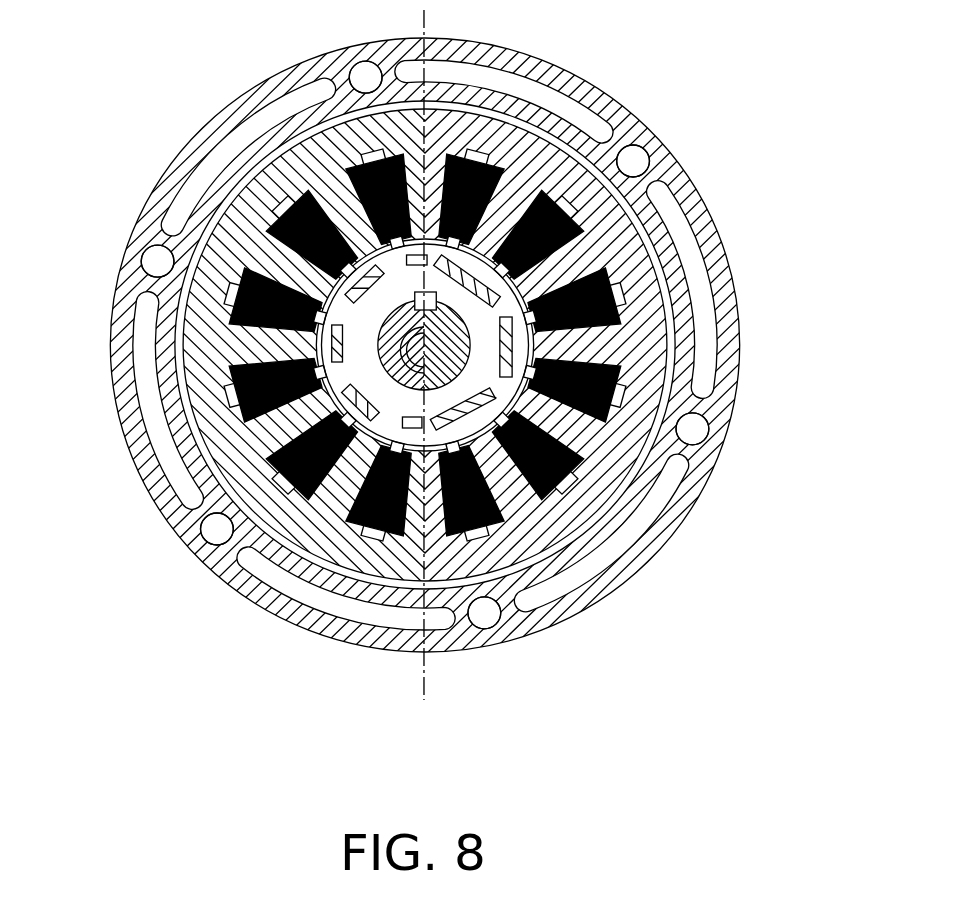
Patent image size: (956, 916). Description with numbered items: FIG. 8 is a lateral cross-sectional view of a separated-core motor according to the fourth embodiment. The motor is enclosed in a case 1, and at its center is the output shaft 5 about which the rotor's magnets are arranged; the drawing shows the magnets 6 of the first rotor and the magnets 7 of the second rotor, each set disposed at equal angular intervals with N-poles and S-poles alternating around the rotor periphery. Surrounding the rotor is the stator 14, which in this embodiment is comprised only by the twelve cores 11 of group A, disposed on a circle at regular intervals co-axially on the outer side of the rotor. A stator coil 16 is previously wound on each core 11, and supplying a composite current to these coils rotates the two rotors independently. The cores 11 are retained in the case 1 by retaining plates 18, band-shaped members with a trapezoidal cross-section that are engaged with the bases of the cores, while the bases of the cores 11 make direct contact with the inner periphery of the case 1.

The case 1 is at (463, 645).
The output shaft 5 is at (237, 216).
The magnets 6 is at (468, 420).
The magnets 7 is at (402, 338).
The cores 11 is at (565, 163).
The stator 14 is at (565, 163).
The stator coil 16 is at (260, 446).
The retaining plates 18 is at (489, 165).